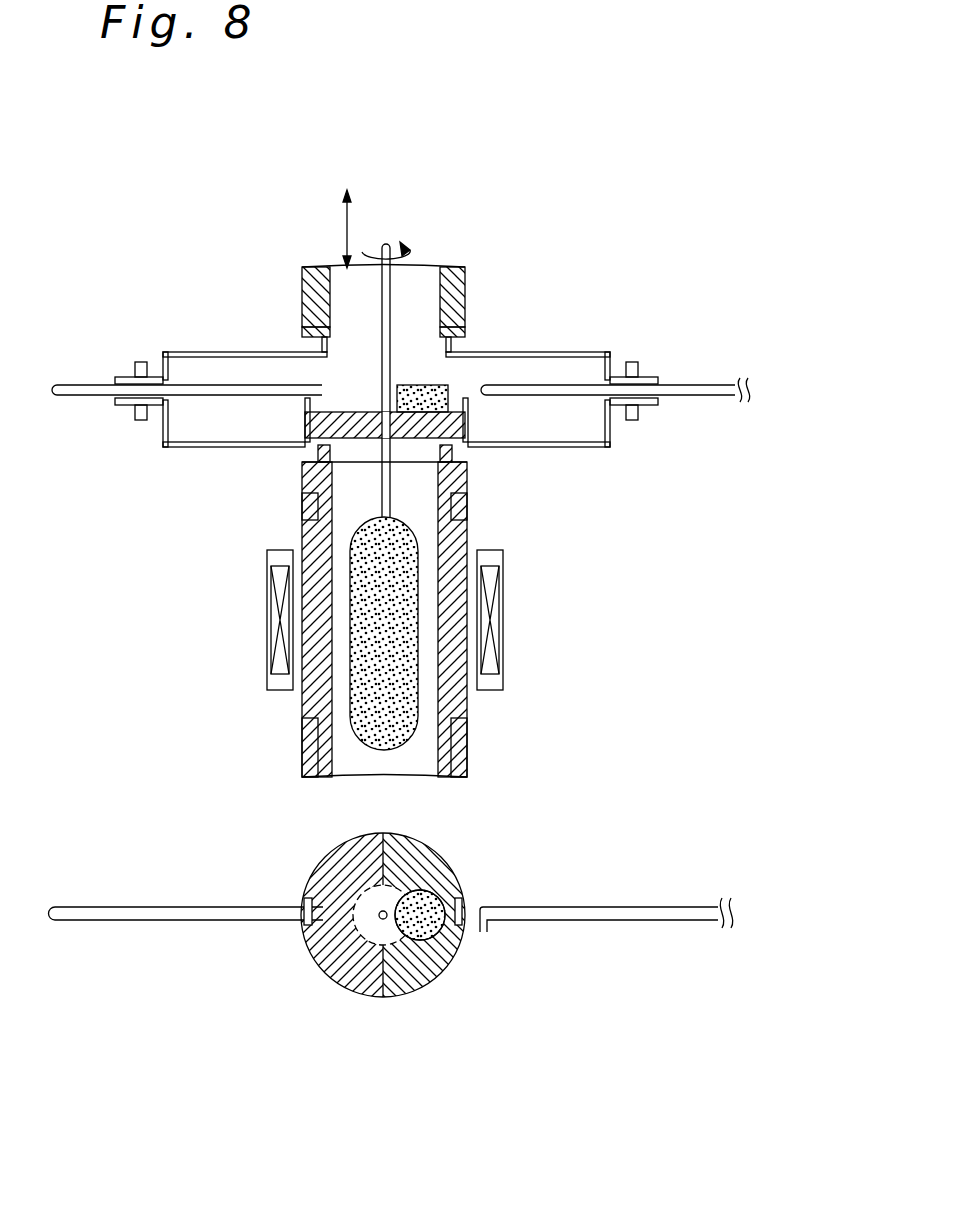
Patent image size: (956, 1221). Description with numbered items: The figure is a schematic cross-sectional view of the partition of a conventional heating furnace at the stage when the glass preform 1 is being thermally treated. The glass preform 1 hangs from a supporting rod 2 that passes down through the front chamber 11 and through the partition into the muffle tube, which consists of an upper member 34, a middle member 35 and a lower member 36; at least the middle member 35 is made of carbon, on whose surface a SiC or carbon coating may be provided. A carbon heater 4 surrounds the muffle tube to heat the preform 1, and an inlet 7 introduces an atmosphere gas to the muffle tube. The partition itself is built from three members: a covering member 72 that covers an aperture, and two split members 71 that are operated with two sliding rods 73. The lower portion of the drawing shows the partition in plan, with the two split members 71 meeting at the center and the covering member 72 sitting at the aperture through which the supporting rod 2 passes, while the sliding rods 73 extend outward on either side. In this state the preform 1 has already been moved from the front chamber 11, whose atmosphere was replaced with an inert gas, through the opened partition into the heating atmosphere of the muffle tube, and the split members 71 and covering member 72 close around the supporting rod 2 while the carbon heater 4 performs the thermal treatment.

The glass soot preform 1 is at (375, 597).
The supporting rod 2 is at (384, 292).
The carbon heater 4 is at (280, 673).
The inlet 7 is at (310, 958).
The front chamber 11 is at (430, 298).
The upper member 34 is at (462, 480).
The middle member 35 is at (455, 595).
The lower member 36 is at (465, 752).
The split members 71 is at (300, 430).
The covering member 72 is at (440, 388).
The sliding rods 73 is at (231, 388).